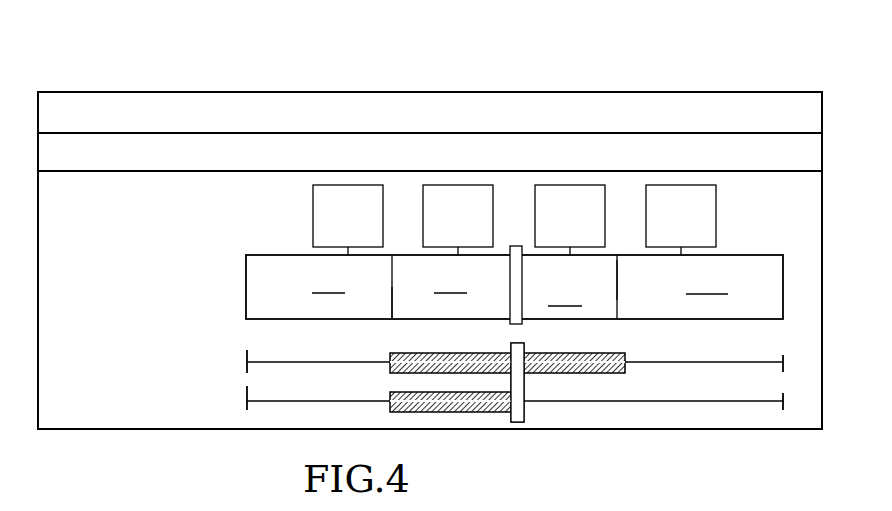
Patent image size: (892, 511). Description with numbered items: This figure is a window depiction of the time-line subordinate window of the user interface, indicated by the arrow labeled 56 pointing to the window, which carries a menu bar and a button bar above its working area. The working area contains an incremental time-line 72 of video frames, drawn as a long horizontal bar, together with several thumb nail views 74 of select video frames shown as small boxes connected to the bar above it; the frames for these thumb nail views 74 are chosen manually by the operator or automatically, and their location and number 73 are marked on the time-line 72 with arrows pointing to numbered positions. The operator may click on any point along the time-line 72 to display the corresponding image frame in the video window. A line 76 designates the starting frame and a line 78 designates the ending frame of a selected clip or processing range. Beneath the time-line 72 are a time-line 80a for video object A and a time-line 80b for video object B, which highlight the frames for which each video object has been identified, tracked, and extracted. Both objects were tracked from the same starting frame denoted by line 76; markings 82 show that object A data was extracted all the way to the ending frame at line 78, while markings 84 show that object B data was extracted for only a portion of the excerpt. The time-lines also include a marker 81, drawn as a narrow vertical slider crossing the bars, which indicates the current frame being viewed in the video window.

The graphical user interface window 56 is at (635, 57).
The incremental time-line 72 is at (760, 256).
The location and number of frames 73 is at (313, 299).
The thumb nail views 74 is at (313, 205).
The starting frame line 76 is at (392, 288).
The ending frame line 78 is at (618, 293).
The time-line for video object A 80a is at (705, 361).
The time-line for video object B 80b is at (712, 402).
The current frame marker 81 is at (523, 280).
The markings for video object A 82 is at (480, 355).
The markings for video object B 84 is at (488, 410).